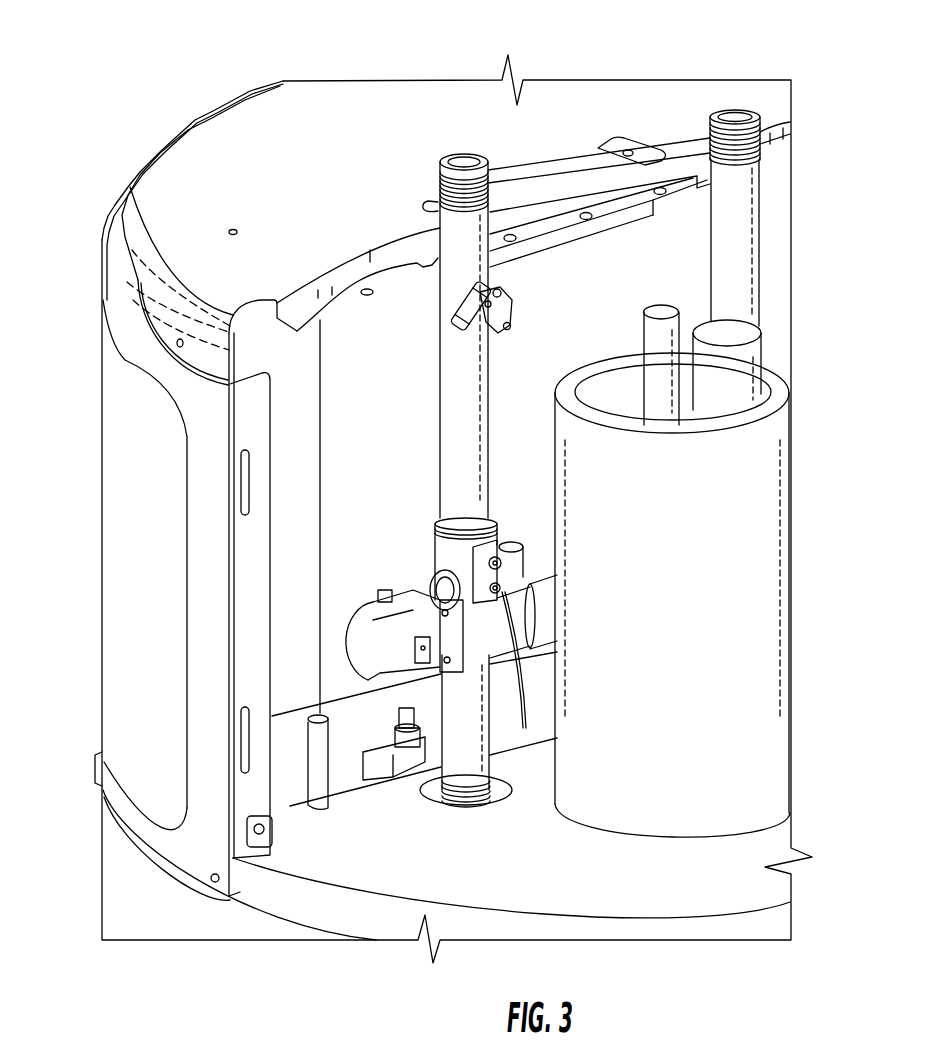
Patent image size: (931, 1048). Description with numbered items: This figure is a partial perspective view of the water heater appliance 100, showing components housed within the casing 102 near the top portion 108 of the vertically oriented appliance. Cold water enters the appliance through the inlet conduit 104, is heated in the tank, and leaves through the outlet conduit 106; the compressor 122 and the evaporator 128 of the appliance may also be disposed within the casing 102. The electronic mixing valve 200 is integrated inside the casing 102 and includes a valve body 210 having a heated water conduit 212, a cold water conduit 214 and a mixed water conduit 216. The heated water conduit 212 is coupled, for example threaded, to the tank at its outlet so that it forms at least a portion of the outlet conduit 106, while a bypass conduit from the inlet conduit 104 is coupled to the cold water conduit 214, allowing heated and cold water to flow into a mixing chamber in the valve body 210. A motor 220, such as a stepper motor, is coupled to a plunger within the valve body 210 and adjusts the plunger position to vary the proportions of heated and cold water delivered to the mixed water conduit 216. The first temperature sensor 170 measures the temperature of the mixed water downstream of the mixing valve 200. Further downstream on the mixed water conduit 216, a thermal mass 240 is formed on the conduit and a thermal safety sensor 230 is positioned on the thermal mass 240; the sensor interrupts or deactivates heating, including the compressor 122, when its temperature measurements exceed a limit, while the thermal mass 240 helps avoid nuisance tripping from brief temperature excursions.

The water heater appliance 100 is at (143, 92).
The casing 102 is at (130, 485).
The inlet conduit 104 is at (735, 252).
The outlet conduit 106 is at (467, 160).
The top portion 108 is at (98, 277).
The compressor 122 is at (730, 530).
The evaporator 128 is at (350, 338).
The first temperature sensor 170 is at (500, 556).
The mixing valve 200 is at (423, 577).
The valve body 210 is at (492, 668).
The heated water conduit 212 is at (462, 773).
The cold water conduit 214 is at (530, 612).
The mixed water conduit 216 is at (455, 415).
The motor 220 is at (357, 627).
The thermal safety sensor 230 is at (507, 304).
The thermal mass 240 is at (463, 330).